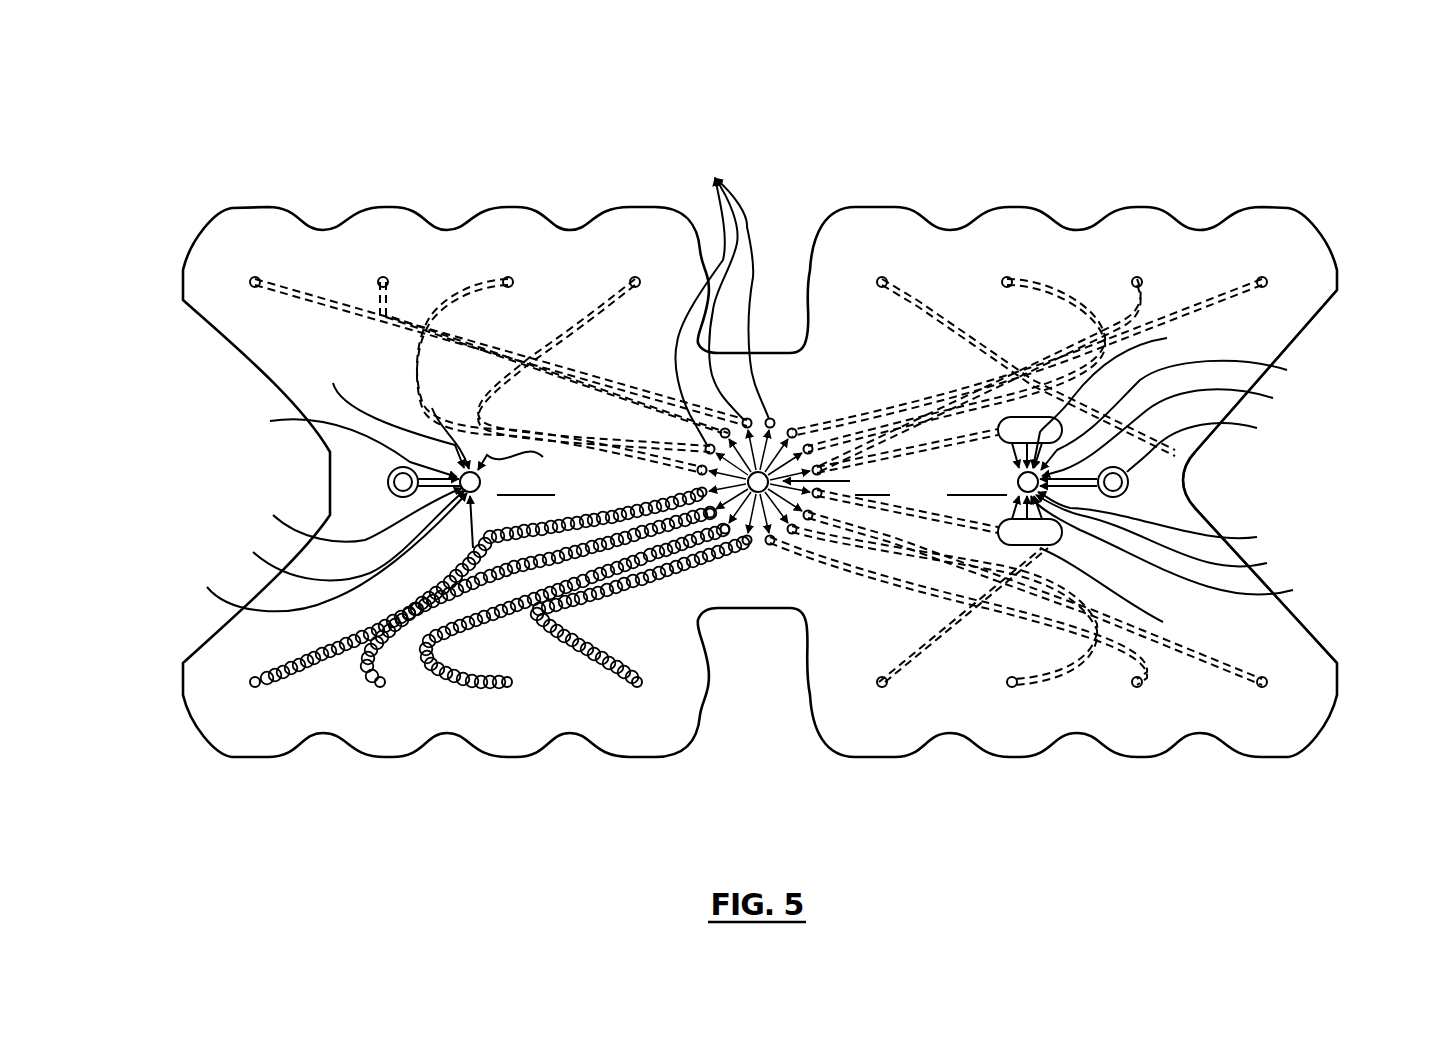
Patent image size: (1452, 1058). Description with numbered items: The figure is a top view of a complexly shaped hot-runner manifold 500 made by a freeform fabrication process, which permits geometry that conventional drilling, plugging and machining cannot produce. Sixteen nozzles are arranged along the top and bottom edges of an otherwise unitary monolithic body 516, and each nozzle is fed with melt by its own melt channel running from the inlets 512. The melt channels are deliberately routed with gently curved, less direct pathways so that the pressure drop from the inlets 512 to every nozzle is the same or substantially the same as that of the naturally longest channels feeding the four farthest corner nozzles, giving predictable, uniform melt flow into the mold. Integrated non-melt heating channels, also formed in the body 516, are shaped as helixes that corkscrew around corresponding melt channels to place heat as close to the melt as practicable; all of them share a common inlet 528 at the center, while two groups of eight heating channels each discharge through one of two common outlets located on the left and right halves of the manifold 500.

The hot-runner manifold 500 is at (958, 105).
The inlets 512 is at (722, 298).
The unitary monolithic body 516 is at (1190, 500).
The common inlet 528 is at (762, 492).